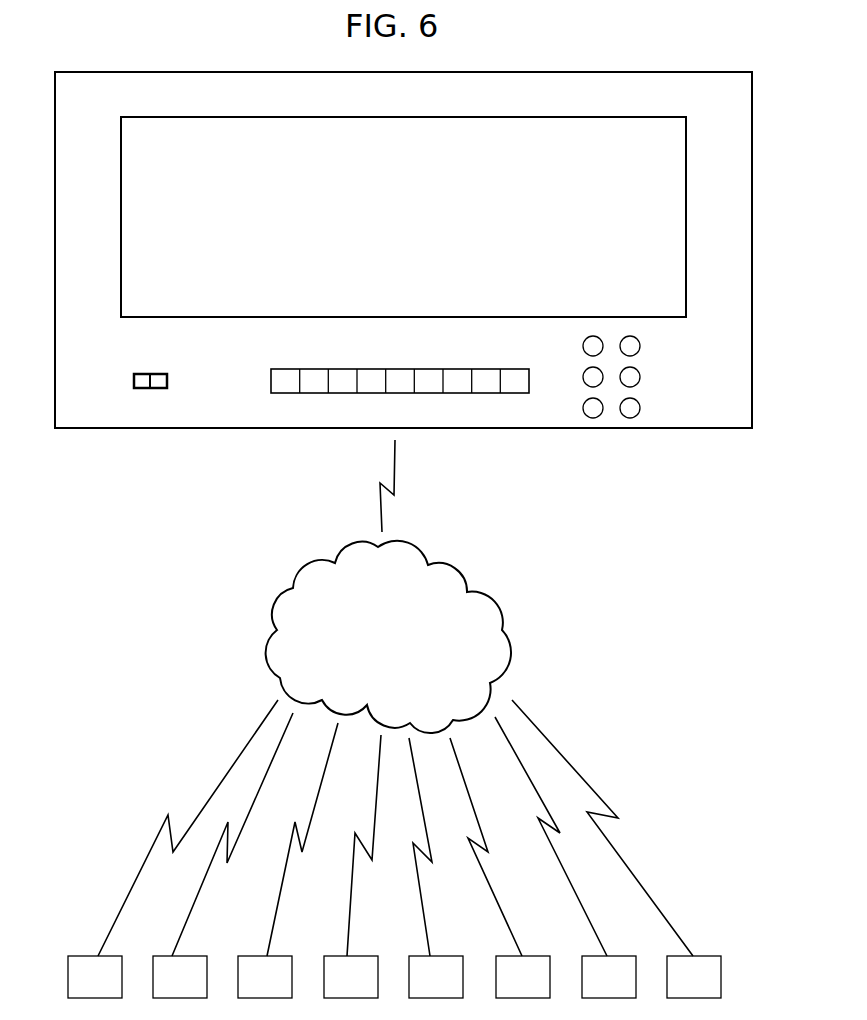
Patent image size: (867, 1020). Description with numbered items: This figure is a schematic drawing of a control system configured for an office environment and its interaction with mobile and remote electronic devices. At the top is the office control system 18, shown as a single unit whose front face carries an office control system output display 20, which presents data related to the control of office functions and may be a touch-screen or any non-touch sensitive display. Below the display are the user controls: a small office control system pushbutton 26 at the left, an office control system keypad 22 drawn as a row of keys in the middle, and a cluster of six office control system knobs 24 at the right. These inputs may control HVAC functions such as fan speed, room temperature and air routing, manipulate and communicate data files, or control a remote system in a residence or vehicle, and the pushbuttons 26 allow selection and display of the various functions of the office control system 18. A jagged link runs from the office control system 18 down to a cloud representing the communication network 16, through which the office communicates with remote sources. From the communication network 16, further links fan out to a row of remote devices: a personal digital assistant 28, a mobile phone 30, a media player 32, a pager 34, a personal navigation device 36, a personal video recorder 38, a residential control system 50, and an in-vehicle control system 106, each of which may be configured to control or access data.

The communication network 16 is at (503, 612).
The office control system 18 is at (223, 71).
The office control system output display 20 is at (560, 117).
The office control system keypad 22 is at (487, 390).
The office control system knobs 24 is at (640, 409).
The office control system pushbuttons 26 is at (140, 390).
The personal digital assistant 28 is at (173, 849).
The mobile phone 30 is at (223, 855).
The media player 32 is at (288, 860).
The pager 34 is at (352, 866).
The personal navigation device 36 is at (436, 868).
The personal video recorder 38 is at (500, 868).
The residential control system 50 is at (565, 857).
The in-vehicle control system 106 is at (616, 849).